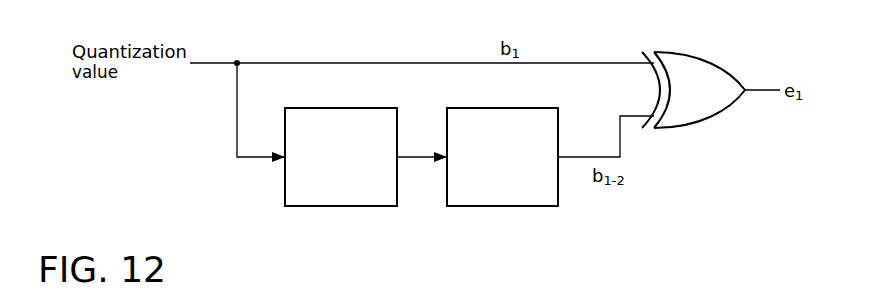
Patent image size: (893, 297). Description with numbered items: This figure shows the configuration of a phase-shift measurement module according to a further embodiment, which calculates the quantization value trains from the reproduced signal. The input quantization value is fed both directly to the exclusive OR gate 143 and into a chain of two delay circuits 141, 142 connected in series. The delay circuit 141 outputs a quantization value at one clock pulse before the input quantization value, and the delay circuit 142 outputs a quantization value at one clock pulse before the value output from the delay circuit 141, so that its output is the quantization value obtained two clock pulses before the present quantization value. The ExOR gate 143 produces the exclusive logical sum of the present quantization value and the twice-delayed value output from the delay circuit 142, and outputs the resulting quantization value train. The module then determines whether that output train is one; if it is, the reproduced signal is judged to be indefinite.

The delay circuit 141 is at (311, 207).
The delay circuit 142 is at (473, 207).
The exclusive OR (ExOR) gate 143 is at (731, 64).